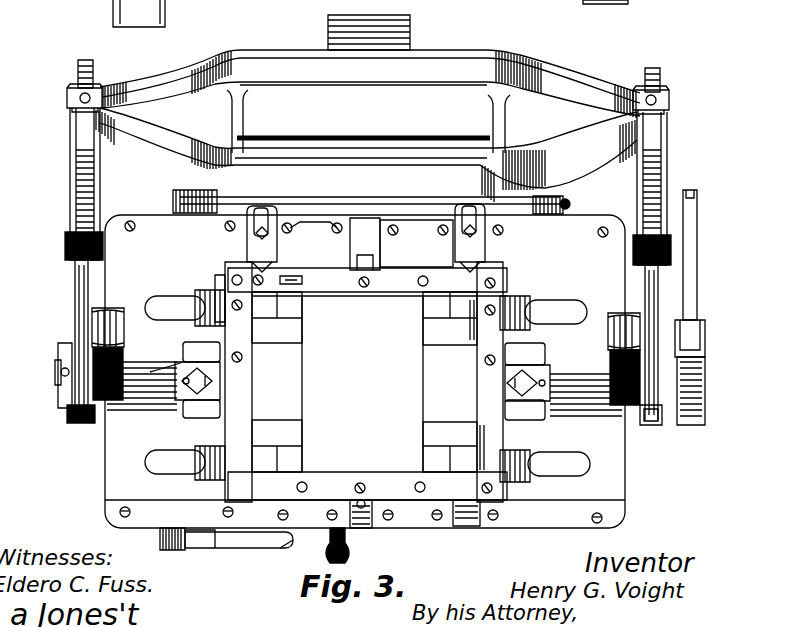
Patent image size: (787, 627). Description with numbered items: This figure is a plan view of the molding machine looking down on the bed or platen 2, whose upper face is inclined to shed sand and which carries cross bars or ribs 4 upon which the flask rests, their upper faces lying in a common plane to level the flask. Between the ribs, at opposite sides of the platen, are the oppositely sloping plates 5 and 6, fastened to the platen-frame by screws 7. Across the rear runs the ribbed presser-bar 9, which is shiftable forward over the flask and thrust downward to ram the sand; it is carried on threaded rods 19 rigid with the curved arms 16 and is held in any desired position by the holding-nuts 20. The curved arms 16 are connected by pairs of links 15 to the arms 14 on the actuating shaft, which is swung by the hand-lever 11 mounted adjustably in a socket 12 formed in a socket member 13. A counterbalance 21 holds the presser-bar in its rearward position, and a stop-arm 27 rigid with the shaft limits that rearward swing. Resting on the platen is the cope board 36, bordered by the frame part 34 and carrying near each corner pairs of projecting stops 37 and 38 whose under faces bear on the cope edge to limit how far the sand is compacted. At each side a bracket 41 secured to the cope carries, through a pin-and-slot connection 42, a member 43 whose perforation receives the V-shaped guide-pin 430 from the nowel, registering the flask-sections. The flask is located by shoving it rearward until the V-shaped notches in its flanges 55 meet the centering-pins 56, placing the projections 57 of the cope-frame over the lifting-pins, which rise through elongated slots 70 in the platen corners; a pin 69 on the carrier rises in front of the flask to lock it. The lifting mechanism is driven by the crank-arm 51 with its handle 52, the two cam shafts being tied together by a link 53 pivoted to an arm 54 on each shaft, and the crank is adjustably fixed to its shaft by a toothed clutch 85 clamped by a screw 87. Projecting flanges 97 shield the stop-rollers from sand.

The bed or platen 2 is at (135, 220).
The cross bars or ribs 4 is at (395, 475).
The plate 5 is at (364, 372).
The plate 6 is at (387, 244).
The screws 7 is at (300, 540).
The presser-bar 9 is at (368, 126).
The hand-lever 11 is at (697, 270).
The socket 12 is at (703, 350).
The socket member 13 is at (705, 405).
The arms 14 is at (75, 423).
The links 15 is at (75, 295).
The curved arm 16 is at (70, 208).
The threaded rod 19 is at (70, 172).
The holding-nuts 20 is at (67, 93).
The counterbalance 21 is at (410, 32).
The stop-arm 27 is at (58, 352).
The horizontal frame bar 34 is at (367, 384).
The board 36 is at (362, 384).
The projecting stops 37 is at (285, 370).
The projecting stops 38 is at (428, 312).
The bracket 41 is at (203, 350).
The pin-and-slot connection 42 is at (331, 388).
The member 43 is at (185, 372).
The crank-arm 51 is at (272, 548).
The handle 52 is at (347, 560).
The link 53 is at (548, 192).
The arm 54 is at (200, 195).
The flanges 55 is at (503, 258).
The centering-pins 56 is at (250, 244).
The projections 57 is at (200, 293).
The pin 69 is at (363, 500).
The elongated slot 70 is at (172, 318).
The toothed clutch 85 is at (160, 540).
The screw 87 is at (188, 550).
The projecting flanges 97 is at (108, 312).
The V-shaped guide-pin 430 is at (506, 384).